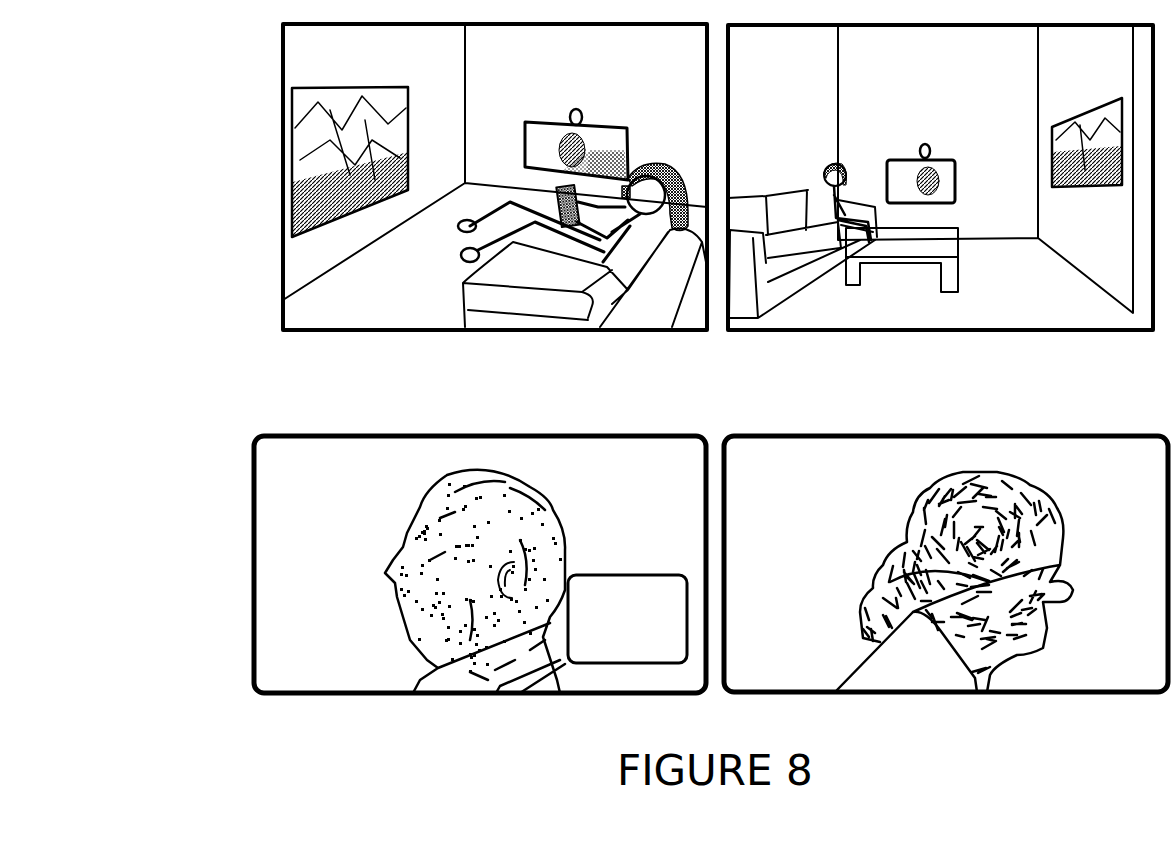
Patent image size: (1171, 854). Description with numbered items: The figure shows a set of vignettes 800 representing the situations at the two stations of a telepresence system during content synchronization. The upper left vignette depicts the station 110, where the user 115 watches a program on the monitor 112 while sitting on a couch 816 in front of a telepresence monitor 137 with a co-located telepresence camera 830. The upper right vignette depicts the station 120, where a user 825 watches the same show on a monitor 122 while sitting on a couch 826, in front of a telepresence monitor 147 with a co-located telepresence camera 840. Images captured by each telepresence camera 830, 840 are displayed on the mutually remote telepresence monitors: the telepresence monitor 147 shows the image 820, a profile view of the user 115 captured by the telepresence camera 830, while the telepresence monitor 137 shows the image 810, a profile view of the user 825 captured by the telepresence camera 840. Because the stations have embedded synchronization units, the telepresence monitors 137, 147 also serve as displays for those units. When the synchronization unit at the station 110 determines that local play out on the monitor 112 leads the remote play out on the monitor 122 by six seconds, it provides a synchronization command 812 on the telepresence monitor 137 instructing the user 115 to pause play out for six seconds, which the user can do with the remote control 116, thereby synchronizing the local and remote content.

The set of vignettes 800 is at (235, 69).
The station 110 is at (440, 330).
The monitor 112 is at (328, 88).
The telepresence monitor 137 is at (565, 120).
The telepresence camera 830 is at (581, 110).
The synchronization command 812 is at (605, 158).
The remote control 116 is at (553, 190).
The user 115 is at (488, 246).
The couch 816 is at (468, 298).
The station 120 is at (908, 330).
The monitor 122 is at (1093, 107).
The telepresence monitor 147 is at (955, 160).
The telepresence camera 840 is at (922, 145).
The user 825 is at (828, 163).
The couch 826 is at (805, 288).
The image 810 is at (335, 495).
The image 820 is at (810, 495).